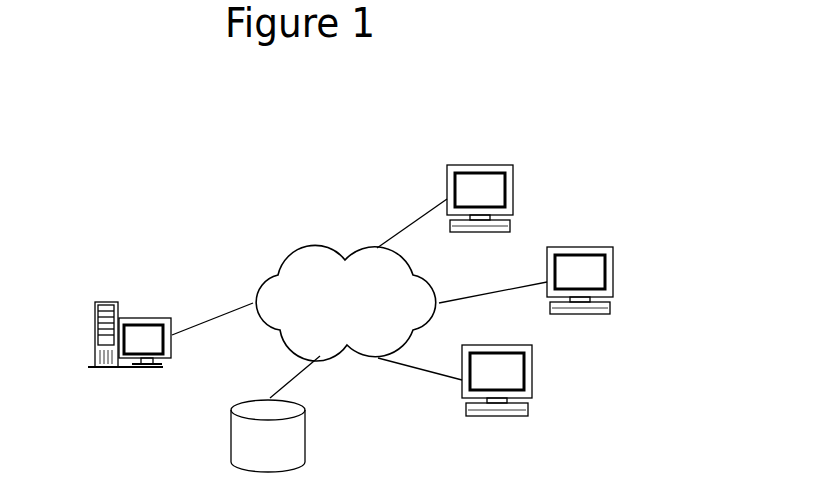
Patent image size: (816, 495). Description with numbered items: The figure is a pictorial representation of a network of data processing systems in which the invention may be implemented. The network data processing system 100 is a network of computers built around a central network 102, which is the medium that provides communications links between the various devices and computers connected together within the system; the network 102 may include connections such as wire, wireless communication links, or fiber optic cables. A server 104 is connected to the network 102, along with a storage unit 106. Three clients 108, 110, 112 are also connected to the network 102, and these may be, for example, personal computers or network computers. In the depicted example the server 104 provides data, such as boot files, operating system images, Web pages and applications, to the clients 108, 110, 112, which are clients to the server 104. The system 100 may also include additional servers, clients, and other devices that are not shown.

The network data processing system 100 is at (401, 410).
The network 102 is at (333, 300).
The server 104 is at (144, 318).
The storage unit 106 is at (305, 437).
The client 108 is at (478, 165).
The client 110 is at (582, 247).
The client 112 is at (532, 380).